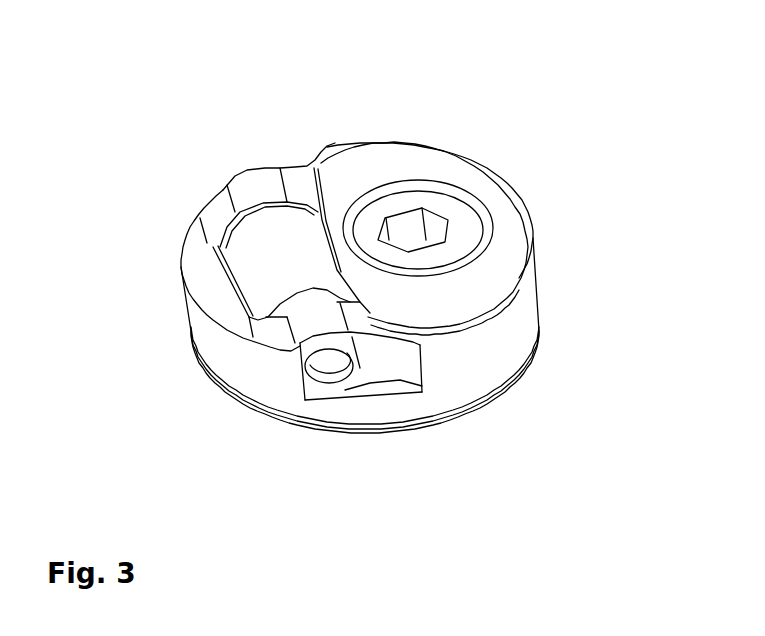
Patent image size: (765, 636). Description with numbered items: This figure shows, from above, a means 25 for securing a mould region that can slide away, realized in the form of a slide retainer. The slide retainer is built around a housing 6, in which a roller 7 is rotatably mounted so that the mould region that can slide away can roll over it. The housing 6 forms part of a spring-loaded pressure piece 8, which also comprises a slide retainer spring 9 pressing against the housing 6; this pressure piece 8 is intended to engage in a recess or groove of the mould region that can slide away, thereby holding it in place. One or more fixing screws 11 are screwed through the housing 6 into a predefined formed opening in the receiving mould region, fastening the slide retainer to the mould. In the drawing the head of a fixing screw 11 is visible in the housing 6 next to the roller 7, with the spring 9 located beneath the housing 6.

The means for securing a mould region 25 is at (203, 92).
The housing 6 is at (523, 310).
The roller 7 is at (268, 275).
The spring-loaded pressure piece 8 is at (572, 240).
The slide retainer spring 9 is at (470, 403).
The fixing screw 11 is at (453, 210).